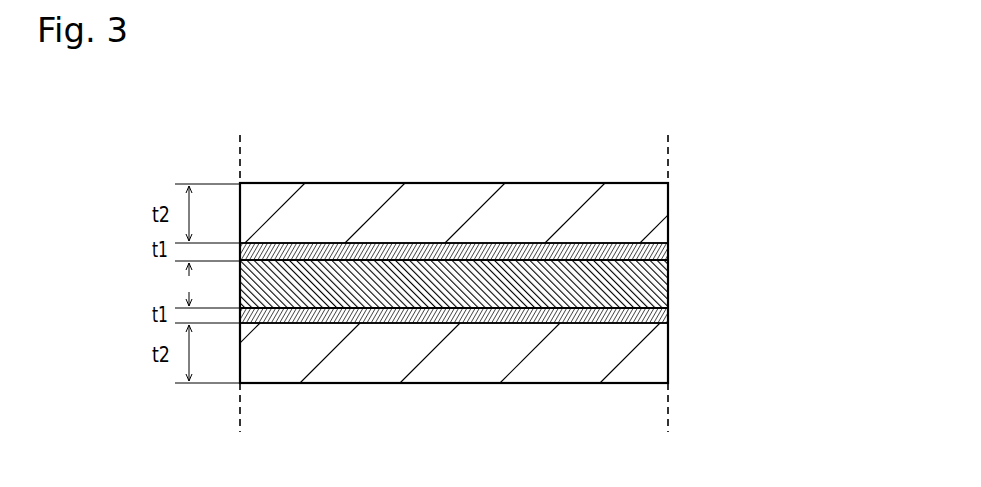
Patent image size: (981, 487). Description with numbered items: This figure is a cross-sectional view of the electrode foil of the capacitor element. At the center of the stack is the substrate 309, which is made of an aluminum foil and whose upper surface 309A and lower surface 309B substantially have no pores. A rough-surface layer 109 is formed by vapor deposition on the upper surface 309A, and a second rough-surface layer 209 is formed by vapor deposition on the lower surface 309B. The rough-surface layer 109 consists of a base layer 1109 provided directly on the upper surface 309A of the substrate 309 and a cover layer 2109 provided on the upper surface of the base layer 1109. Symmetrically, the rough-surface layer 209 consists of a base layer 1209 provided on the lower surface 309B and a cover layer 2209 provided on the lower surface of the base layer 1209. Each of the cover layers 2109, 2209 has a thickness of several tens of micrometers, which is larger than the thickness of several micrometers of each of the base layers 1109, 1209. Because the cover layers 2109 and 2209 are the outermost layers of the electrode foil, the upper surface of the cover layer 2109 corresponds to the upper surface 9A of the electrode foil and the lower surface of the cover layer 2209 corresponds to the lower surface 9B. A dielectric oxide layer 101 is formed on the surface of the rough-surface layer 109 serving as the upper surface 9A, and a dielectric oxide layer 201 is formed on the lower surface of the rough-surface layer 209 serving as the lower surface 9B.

The upper surface of electrode foil 9A is at (265, 183).
The lower surface of electrode foil 9B is at (266, 383).
The upper surface of substrate 309A is at (440, 258).
The lower surface of substrate 309B is at (385, 310).
The dielectric oxide layer 101 is at (655, 156).
The dielectric oxide layer 201 is at (643, 422).
The cover layer 2109 is at (650, 217).
The base layer 1109 is at (640, 244).
The rough-surface layer 109 is at (770, 182).
The substrate 309 is at (652, 285).
The base layer 1209 is at (665, 319).
The cover layer 2209 is at (655, 350).
The rough-surface layer 209 is at (770, 310).